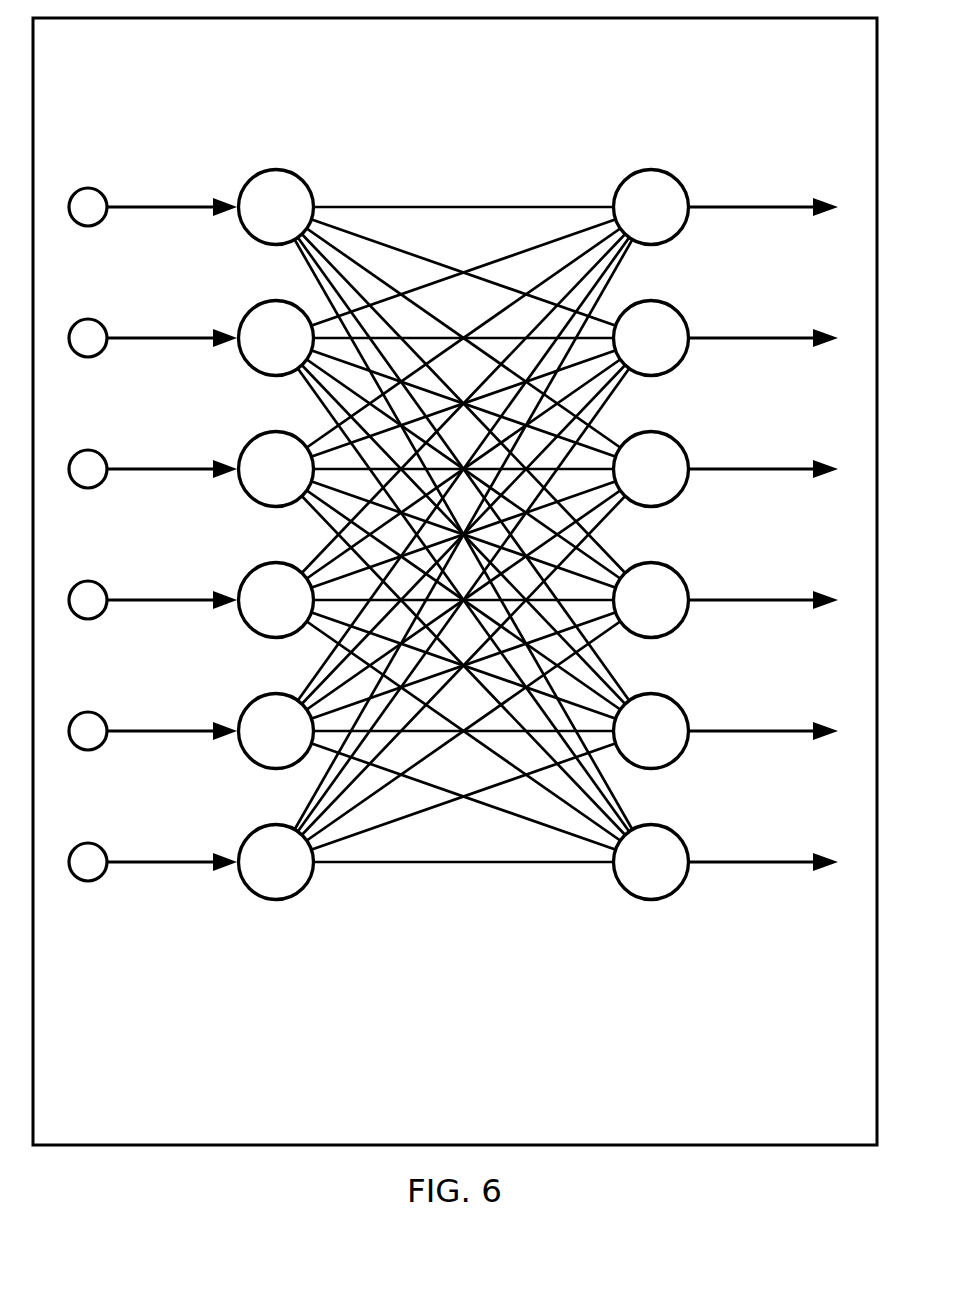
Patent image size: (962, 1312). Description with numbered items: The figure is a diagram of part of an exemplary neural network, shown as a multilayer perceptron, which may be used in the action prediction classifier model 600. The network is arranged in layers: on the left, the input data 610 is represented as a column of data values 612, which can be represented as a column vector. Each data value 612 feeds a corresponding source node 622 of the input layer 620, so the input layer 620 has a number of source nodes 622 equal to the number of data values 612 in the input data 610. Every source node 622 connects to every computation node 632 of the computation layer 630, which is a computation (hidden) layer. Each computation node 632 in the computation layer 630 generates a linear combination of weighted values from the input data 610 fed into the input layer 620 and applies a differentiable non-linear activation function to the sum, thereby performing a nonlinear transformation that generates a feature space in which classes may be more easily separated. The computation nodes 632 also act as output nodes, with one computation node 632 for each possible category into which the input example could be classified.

The action prediction classifier model 600 is at (477, 1132).
The input data 610 is at (92, 165).
The data values 612 is at (88, 872).
The input layer 620 is at (278, 150).
The source nodes 622 is at (277, 890).
The computation layer 630 is at (653, 148).
The computation nodes 632 is at (651, 890).